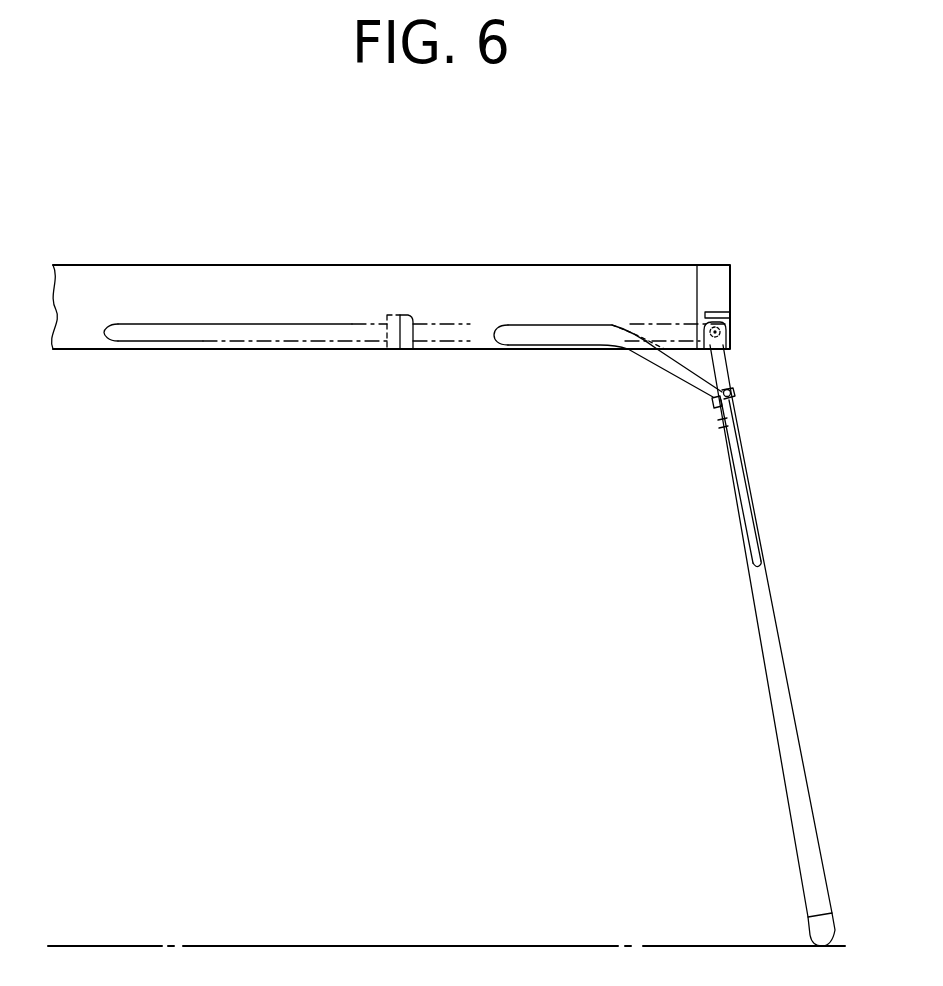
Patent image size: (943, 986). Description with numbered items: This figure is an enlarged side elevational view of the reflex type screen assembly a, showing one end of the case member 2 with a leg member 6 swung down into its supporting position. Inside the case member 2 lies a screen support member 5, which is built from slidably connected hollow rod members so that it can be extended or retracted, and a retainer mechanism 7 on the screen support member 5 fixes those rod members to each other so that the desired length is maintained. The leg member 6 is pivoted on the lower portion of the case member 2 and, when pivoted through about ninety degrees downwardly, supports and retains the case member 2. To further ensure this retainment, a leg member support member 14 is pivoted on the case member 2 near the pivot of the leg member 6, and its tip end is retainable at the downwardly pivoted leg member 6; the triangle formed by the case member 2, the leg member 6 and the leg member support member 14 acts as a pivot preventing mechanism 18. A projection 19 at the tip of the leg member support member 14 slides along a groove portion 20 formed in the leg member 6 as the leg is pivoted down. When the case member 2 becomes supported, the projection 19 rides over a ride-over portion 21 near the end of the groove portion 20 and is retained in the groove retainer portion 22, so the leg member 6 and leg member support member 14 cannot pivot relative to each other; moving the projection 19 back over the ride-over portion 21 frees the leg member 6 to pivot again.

The screen assembly a is at (380, 263).
The case member 2 is at (602, 265).
The screen support member 5 is at (325, 349).
The leg member 6 is at (776, 617).
The retainer mechanism 7 is at (413, 349).
The leg member support member 14 is at (650, 365).
The pivot preventing mechanism 18 is at (712, 370).
The projection 19 is at (732, 379).
The groove portion 20 is at (752, 510).
The ride-over portion 21 is at (718, 422).
The groove retainer portion 22 is at (712, 402).